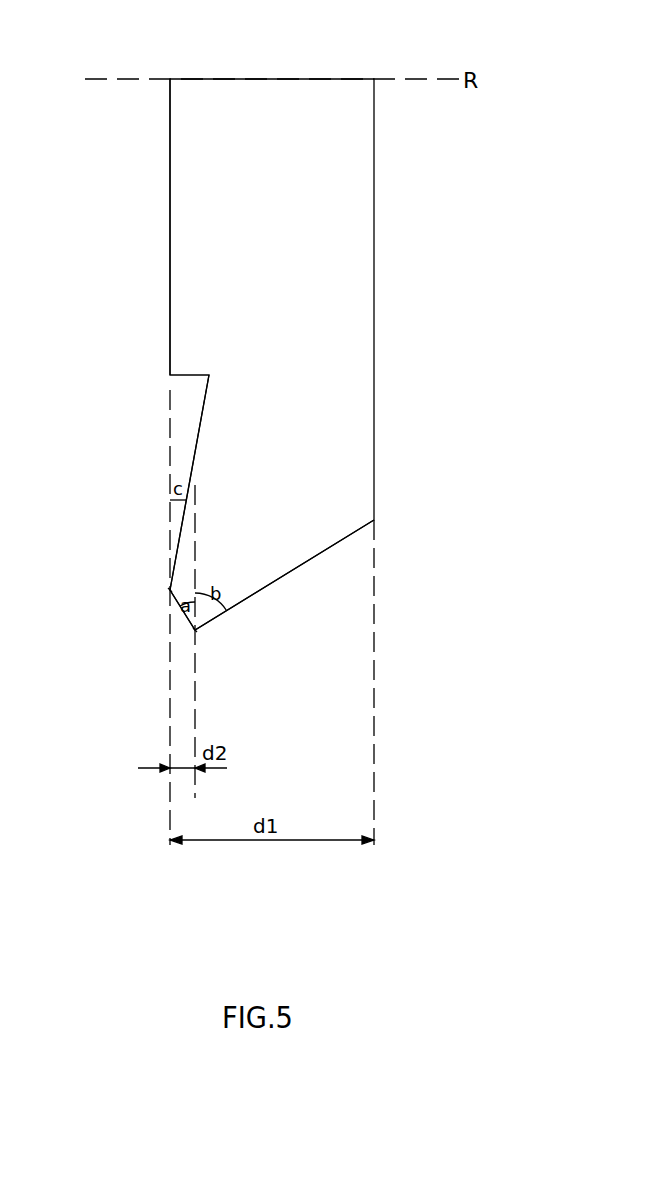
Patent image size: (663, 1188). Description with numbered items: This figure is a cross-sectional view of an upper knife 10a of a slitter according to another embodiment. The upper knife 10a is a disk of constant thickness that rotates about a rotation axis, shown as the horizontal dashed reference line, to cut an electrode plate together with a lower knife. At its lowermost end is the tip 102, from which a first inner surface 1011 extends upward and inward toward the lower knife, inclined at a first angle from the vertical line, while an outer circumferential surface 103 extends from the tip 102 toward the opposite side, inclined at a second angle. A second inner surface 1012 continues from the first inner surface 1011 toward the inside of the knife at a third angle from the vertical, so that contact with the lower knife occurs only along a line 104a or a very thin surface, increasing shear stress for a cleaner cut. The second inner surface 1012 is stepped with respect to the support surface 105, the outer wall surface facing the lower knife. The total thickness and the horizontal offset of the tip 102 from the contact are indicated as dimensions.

The upper knife 10a is at (274, 88).
The support surface 105 is at (170, 262).
The second inner surface 1012 is at (197, 440).
The line 104a is at (170, 590).
The first inner surface 1011 is at (176, 604).
The tip 102 is at (196, 633).
The outer circumferential surface 103 is at (285, 575).